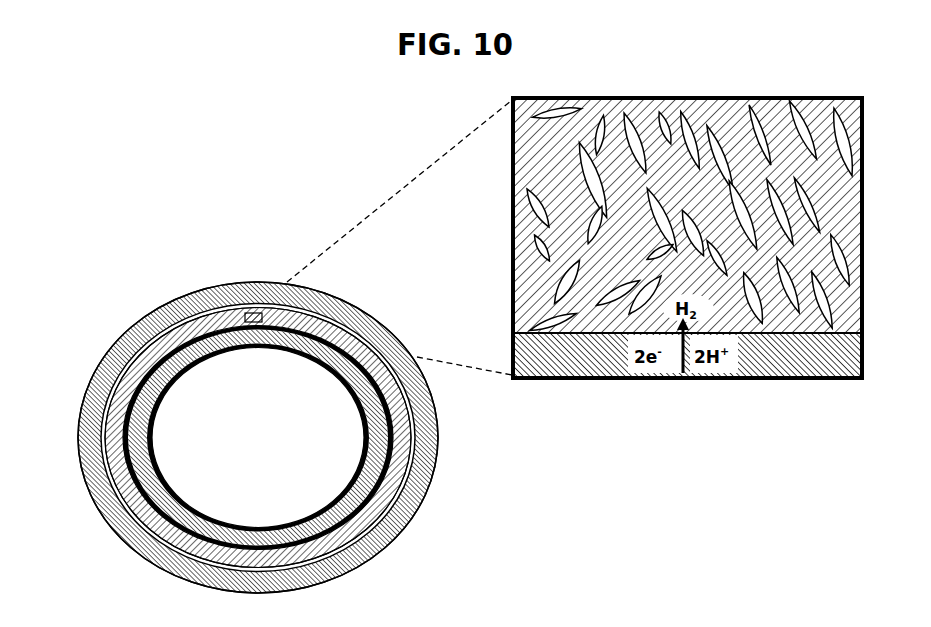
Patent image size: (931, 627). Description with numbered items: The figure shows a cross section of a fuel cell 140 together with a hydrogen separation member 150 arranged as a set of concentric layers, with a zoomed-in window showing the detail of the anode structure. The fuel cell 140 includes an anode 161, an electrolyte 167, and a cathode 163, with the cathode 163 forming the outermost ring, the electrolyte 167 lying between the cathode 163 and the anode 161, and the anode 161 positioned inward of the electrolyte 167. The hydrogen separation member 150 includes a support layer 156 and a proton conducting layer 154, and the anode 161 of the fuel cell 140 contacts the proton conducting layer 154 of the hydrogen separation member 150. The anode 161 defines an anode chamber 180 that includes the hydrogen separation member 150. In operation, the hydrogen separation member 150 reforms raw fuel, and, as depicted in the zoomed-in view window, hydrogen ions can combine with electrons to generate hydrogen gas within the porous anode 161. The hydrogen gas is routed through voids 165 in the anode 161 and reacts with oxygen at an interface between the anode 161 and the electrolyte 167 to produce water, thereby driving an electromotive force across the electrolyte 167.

The fuel cell 140 is at (95, 358).
The hydrogen separation member 150 is at (167, 401).
The proton conducting layer 154 is at (378, 407).
The support layer 156 is at (368, 468).
The anode 161 is at (119, 518).
The cathode 163 is at (434, 467).
The voids 165 is at (512, 168).
The electrolyte 167 is at (101, 472).
The anode chamber 180 is at (351, 524).